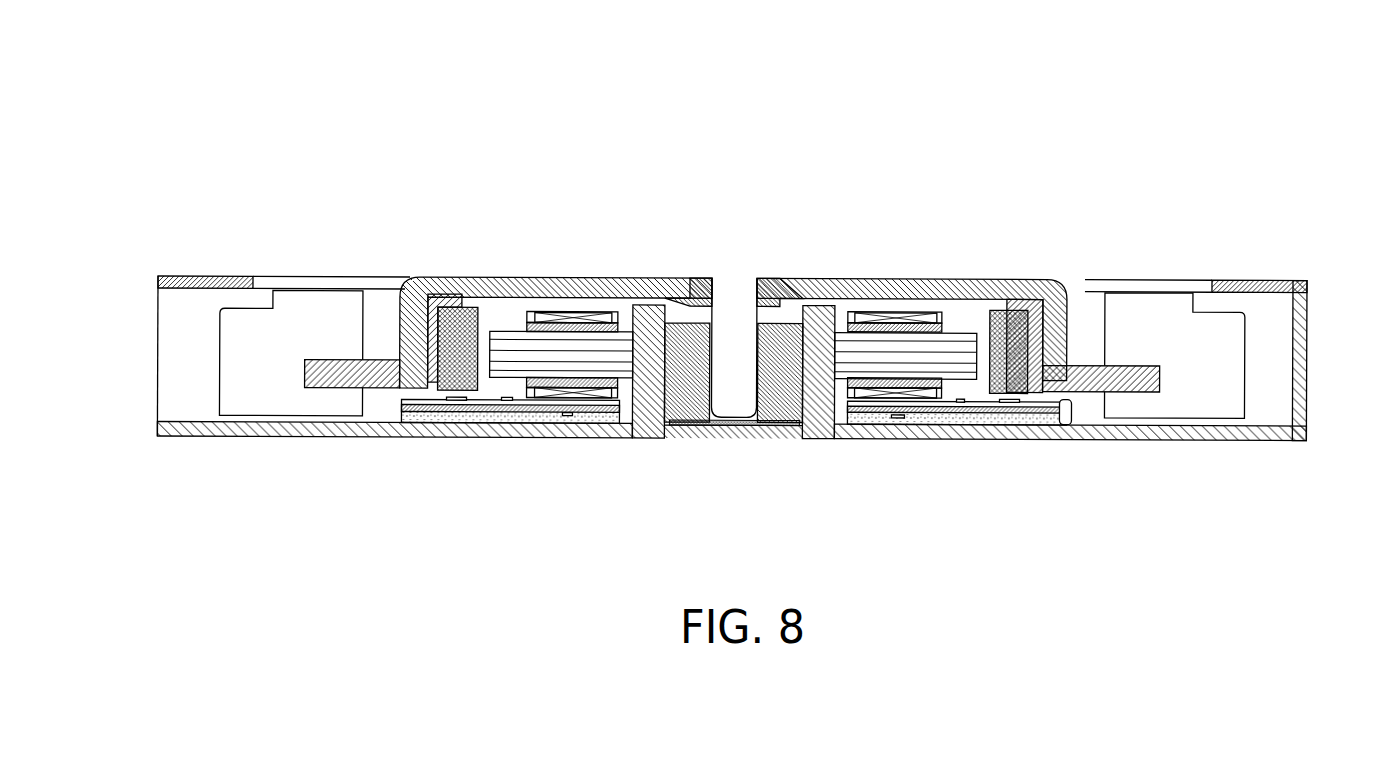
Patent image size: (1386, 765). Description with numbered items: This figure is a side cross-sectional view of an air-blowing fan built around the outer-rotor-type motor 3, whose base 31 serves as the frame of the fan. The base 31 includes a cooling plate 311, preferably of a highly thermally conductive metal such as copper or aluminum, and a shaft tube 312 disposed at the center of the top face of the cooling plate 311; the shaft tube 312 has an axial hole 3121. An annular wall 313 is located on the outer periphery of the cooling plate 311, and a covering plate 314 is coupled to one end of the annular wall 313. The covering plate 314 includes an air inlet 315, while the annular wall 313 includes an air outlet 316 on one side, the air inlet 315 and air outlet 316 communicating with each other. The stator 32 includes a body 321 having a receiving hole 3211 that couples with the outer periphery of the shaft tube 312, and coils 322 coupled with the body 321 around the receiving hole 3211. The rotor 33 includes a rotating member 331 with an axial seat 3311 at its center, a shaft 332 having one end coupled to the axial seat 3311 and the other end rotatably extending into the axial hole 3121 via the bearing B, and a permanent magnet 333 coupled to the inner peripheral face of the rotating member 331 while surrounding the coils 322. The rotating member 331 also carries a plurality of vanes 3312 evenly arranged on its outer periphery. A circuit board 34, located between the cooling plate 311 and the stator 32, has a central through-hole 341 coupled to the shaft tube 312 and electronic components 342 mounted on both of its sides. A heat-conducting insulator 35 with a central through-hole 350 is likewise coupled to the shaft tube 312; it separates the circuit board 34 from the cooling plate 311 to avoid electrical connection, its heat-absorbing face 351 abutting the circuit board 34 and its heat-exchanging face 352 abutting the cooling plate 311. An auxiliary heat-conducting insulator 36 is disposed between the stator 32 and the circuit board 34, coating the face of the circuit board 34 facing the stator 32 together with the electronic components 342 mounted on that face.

The outer-rotor-type motor 3 is at (483, 192).
The base 31 is at (625, 428).
The cooling plate 311 is at (1168, 438).
The shaft tube 312 is at (645, 303).
The axial hole 3121 is at (808, 387).
The annular wall 313 is at (1300, 340).
The covering plate 314 is at (1247, 283).
The air inlet 315 is at (378, 287).
The air outlet 316 is at (173, 306).
The stator 32 is at (970, 330).
The body 321 is at (948, 335).
The receiving hole 3211 is at (848, 318).
The coils 322 is at (906, 318).
The rotor 33 is at (1070, 318).
The rotating member 331 is at (1035, 284).
The axial seat 3311 is at (680, 305).
The vanes 3312 is at (1208, 318).
The shaft 332 is at (727, 303).
The permanent magnet 333 is at (985, 387).
The bearing B is at (780, 305).
The through-hole 350 is at (848, 420).
The circuit board 34 is at (402, 405).
The through-hole 341 is at (617, 408).
The electronic components 342 is at (453, 410).
The heat-conducting insulator 35 is at (1025, 424).
The heat-absorbing face 351 is at (1012, 418).
The heat-exchanging face 352 is at (1040, 422).
The auxiliary heat-conducting insulator 36 is at (1067, 399).